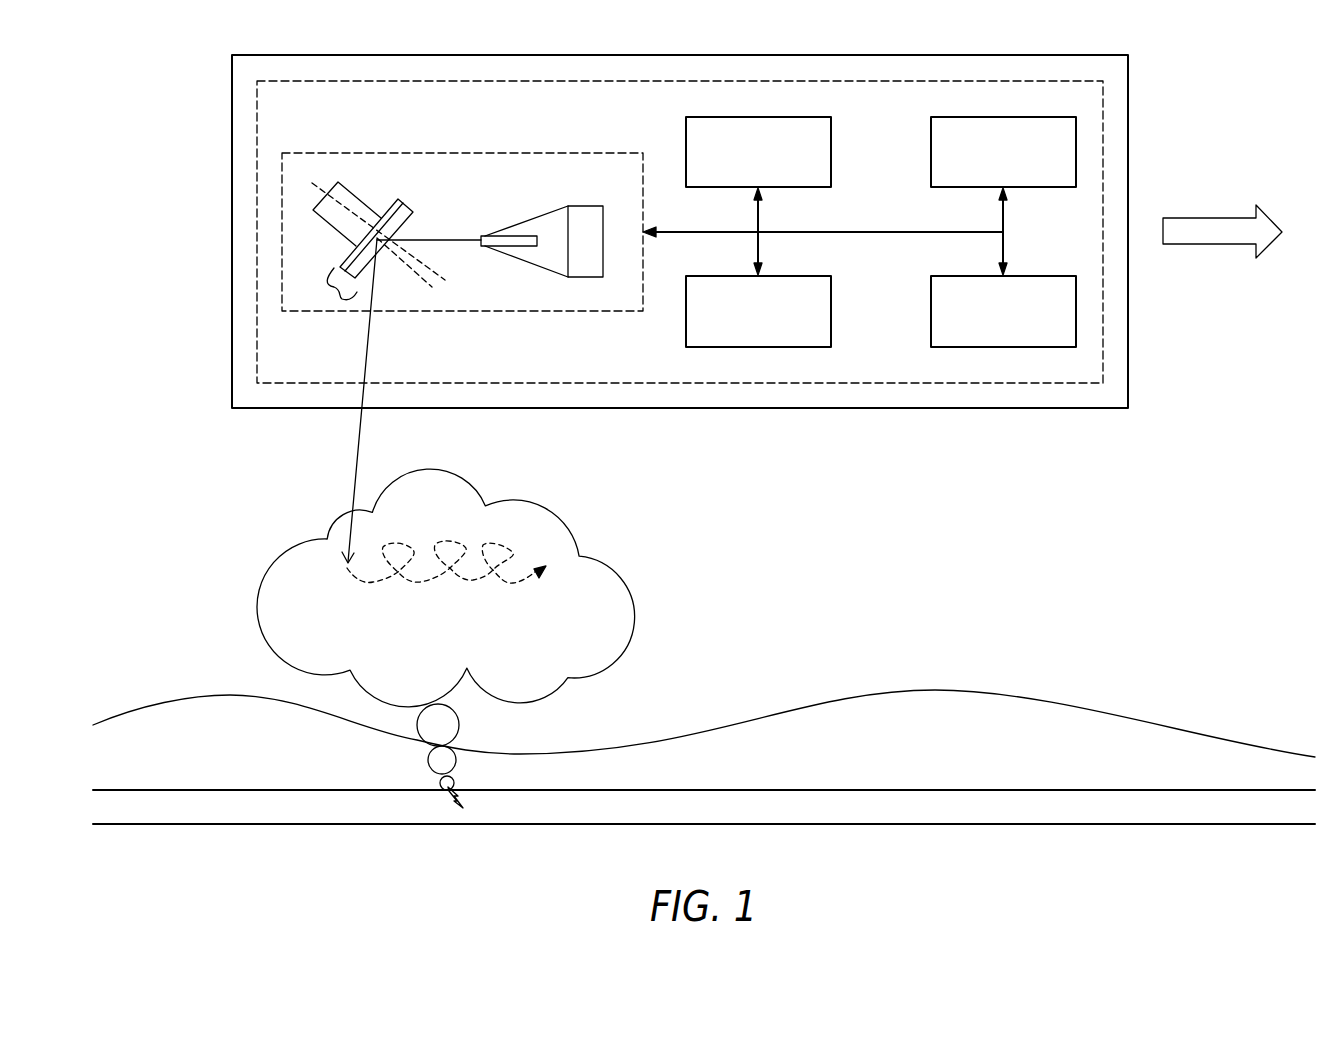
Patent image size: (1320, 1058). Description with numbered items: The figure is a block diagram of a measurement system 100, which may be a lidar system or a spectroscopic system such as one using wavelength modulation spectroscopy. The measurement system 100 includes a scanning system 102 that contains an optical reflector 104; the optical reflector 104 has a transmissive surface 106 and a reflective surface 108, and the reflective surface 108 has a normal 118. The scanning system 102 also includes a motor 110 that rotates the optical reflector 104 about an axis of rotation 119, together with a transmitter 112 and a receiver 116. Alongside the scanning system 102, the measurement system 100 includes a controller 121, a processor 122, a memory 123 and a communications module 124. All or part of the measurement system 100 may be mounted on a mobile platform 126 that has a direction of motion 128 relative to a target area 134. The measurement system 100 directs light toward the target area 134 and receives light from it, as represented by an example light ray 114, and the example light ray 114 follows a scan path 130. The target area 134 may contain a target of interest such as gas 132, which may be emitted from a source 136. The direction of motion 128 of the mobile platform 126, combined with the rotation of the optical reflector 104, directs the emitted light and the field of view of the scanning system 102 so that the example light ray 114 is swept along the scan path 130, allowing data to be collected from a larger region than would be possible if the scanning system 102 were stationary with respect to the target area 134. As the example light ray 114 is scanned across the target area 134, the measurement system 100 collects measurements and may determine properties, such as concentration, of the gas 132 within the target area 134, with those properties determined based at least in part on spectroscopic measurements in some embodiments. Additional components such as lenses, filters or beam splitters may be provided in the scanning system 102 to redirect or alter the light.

The measurement system 100 is at (257, 148).
The scanning system 102 is at (282, 200).
The optical reflector 104 is at (342, 299).
The transmissive surface 106 is at (415, 224).
The reflective surface 108 is at (412, 212).
The motor 110 is at (337, 233).
The transmitter 112 is at (508, 247).
The example light ray 114 is at (348, 535).
The receiver 116 is at (585, 277).
The normal 118 is at (491, 255).
The axis of rotation 119 is at (411, 401).
The controller 121 is at (737, 117).
The processor 122 is at (737, 276).
The memory 123 is at (973, 276).
The communications module 124 is at (973, 117).
The mobile platform 126 is at (300, 55).
The direction of motion 128 is at (1208, 247).
The scan path 130 is at (498, 543).
The gas 132 is at (454, 651).
The target area 134 is at (256, 746).
The source 136 is at (498, 825).